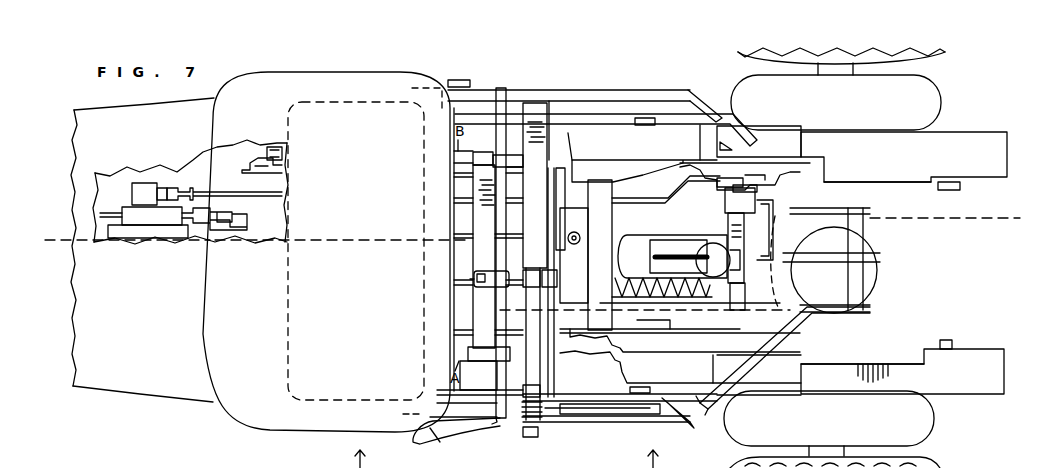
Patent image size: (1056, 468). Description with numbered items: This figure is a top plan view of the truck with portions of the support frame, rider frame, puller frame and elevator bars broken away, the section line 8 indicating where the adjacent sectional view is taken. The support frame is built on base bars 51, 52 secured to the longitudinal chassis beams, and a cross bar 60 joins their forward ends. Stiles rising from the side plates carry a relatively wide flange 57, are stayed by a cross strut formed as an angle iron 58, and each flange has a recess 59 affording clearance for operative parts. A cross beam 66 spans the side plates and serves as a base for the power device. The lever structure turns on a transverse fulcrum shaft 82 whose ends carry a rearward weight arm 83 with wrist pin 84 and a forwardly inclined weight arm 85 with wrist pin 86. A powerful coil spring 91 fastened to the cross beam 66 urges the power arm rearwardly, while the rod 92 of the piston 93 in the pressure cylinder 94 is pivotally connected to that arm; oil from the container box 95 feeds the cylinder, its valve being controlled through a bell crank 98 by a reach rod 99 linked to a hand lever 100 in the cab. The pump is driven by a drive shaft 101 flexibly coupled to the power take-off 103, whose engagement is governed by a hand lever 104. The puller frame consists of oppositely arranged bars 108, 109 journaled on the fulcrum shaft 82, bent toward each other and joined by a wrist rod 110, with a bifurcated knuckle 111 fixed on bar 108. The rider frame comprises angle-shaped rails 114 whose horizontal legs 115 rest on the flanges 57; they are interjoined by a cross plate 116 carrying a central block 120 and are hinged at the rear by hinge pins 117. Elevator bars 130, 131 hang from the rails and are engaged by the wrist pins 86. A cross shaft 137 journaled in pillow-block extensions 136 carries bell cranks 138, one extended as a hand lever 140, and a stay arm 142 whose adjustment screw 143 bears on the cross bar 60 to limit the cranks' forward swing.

The section line 8- 8 is at (533, 260).
The base bar 51 is at (480, 358).
The base bar 52 is at (483, 151).
The flange 57 is at (590, 135).
The angle iron 58 is at (537, 112).
The recess 59 is at (779, 372).
The cross bar 60 is at (475, 207).
The cross beam 66 is at (745, 243).
The fulcrum shaft 82 is at (550, 388).
The weight arm 83 is at (605, 407).
The wrist pin 84 is at (640, 125).
The weight arm 85 is at (467, 403).
The wrist pin 86 is at (452, 80).
The coil spring 91 is at (638, 303).
The rod 92 is at (657, 238).
The piston 93 is at (697, 240).
The pressure cylinder 94 is at (746, 265).
The container box 95 is at (755, 193).
The bell crank 98 is at (740, 181).
The reach rod 99 is at (268, 174).
The hand lever 100 is at (277, 145).
The drive shaft 101 is at (620, 193).
The power take-off 103 is at (122, 210).
The hand lever 104 is at (245, 231).
The bar 108 is at (668, 407).
The bar 109 is at (718, 116).
The wrist rod 110 is at (860, 300).
The bifurcated knuckle 111 is at (700, 405).
The rail 114 is at (900, 181).
The horizontal leg 115 is at (891, 163).
The cross plate 116 is at (610, 222).
The hinge pin 117 is at (951, 334).
The block 120 is at (580, 212).
The elevator bar 130 is at (579, 422).
The elevator bar 131 is at (668, 90).
The extension 136 is at (495, 352).
The cross shaft 137 is at (500, 208).
The bell crank 138 is at (497, 90).
The hand lever 140 is at (439, 437).
The stay arm 142 is at (485, 287).
The adjustment screw 143 is at (484, 271).